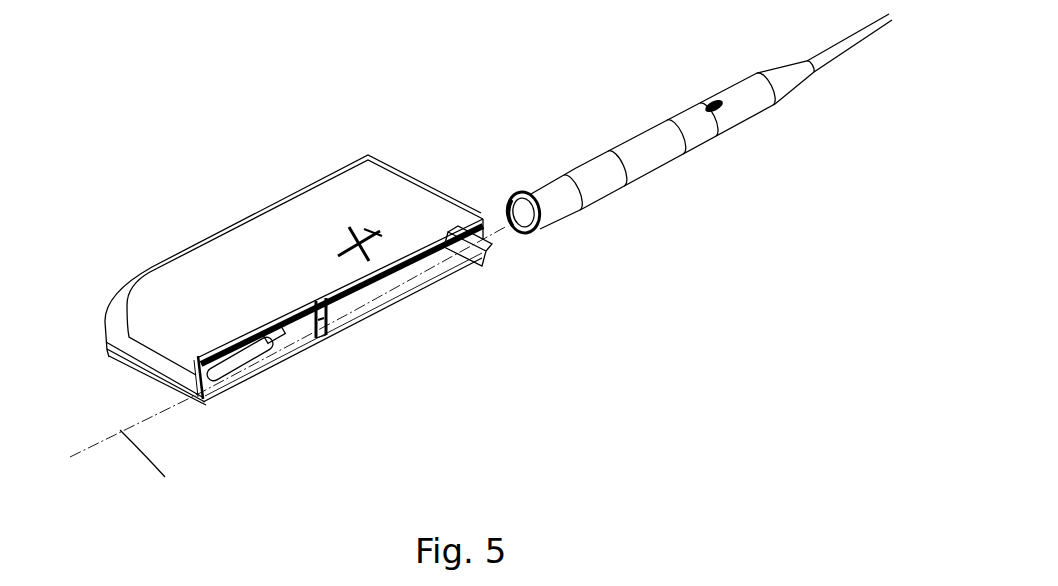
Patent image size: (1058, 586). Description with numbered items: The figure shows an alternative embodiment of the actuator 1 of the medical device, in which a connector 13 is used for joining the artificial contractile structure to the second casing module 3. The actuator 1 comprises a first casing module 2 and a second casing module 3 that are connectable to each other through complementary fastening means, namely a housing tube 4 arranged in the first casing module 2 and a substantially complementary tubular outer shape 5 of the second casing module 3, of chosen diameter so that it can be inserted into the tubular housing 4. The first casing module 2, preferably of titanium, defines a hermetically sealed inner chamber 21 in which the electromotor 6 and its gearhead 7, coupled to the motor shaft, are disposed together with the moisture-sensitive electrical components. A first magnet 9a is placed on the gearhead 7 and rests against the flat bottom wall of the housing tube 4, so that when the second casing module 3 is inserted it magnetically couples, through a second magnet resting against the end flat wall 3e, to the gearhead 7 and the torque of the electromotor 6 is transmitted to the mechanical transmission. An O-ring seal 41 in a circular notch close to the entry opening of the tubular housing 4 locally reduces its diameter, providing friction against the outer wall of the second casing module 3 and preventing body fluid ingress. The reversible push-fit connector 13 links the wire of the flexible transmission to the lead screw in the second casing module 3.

The actuator 1 is at (410, 106).
The first casing module 2 is at (293, 200).
The second casing module 3 is at (711, 127).
The complementary tubular outer shape 5 is at (643, 163).
The end flat wall 3e is at (512, 199).
The housing tube 4 is at (401, 306).
The O-ring seal 41 is at (459, 249).
The electromotor 6 is at (250, 371).
The gearhead 7 is at (293, 353).
The first magnet 9a is at (314, 341).
The connector 13 is at (743, 84).
The inner chamber 21 is at (212, 398).